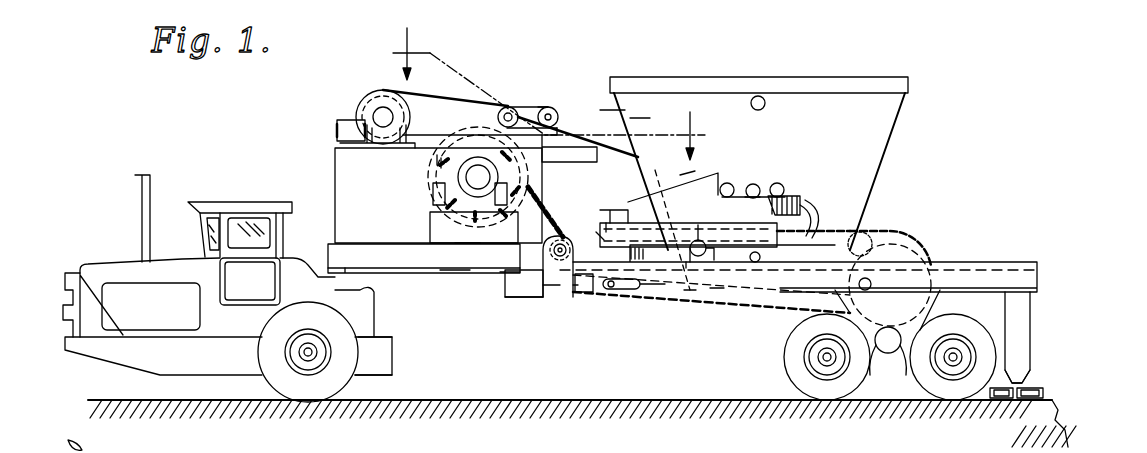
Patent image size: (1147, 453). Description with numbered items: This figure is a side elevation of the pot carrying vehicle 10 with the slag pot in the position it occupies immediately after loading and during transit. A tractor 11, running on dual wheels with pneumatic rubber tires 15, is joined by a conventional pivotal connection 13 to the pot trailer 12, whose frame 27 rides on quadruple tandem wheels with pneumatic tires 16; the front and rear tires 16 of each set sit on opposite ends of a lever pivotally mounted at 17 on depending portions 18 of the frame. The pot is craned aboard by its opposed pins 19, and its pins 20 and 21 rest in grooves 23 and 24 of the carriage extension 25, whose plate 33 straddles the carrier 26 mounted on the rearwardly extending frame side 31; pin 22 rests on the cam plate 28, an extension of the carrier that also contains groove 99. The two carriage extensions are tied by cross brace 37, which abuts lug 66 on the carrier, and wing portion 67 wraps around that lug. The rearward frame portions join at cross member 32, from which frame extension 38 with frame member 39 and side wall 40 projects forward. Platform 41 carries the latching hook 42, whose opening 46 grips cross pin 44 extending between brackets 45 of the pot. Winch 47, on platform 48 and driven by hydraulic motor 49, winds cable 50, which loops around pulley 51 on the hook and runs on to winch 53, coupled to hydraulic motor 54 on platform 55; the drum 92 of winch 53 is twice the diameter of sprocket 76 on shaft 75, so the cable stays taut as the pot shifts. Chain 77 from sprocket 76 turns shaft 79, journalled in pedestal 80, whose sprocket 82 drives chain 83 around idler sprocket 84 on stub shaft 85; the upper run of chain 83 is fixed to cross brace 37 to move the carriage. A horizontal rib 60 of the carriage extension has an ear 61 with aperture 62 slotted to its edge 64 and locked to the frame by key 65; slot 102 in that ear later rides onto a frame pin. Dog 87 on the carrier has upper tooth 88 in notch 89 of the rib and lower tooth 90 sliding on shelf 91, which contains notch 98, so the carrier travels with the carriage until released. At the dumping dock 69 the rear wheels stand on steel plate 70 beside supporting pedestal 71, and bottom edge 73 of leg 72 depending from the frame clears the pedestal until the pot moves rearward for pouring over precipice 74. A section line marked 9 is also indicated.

The section line 9 is at (548, 94).
The pot carrying vehicle 10 is at (940, 58).
The tractor 11 is at (95, 262).
The pot trailer 12 is at (452, 272).
The pivotal connection 13 is at (378, 285).
The pneumatic rubber tires 15 is at (262, 350).
The rubber pneumatic tires 16 is at (785, 372).
The lever pivot 17 is at (888, 353).
The depending portions of the frame 18 is at (866, 318).
The pins 19 is at (766, 103).
The pin 20 is at (730, 183).
The pin 21 is at (757, 184).
The pin 22 is at (783, 185).
The groove 23 is at (725, 183).
The groove 24 is at (752, 184).
The carriage extension 25 is at (686, 172).
The carrier 26 is at (850, 237).
The frame 27 is at (690, 290).
The cam plate 28 is at (790, 197).
The frame side portion 31 is at (622, 293).
The cross member 32 is at (520, 297).
The plate 33 is at (686, 186).
The cross brace 37 is at (620, 212).
The frame extension 38 is at (465, 268).
The frame member 39 is at (510, 273).
The side wall 40 is at (423, 185).
The platform 41 is at (612, 110).
The latching hook 42 is at (540, 105).
The cross pin 44 is at (562, 112).
The bracket 45 is at (642, 118).
The opening 46 is at (552, 106).
The winch 47 is at (372, 92).
The platform 48 is at (337, 138).
The hydraulic motor 49 is at (340, 122).
The cable 50 is at (440, 103).
The pulley 51 is at (506, 108).
The winch 53 is at (460, 140).
The hydraulic motor 54 is at (435, 193).
The platform 55 is at (432, 222).
The horizontal rib 60 is at (655, 235).
The ear portion 61 is at (634, 258).
The aperture 62 is at (548, 297).
The edge of ear 64 is at (584, 292).
The key 65 is at (590, 292).
The lug 66 is at (598, 236).
The wing portion 67 is at (610, 225).
The dumping dock 69 is at (672, 392).
The steel plate 70 is at (578, 398).
The supporting pedestal 71 is at (1045, 392).
The leg portion 72 is at (1032, 305).
The bottom edge 73 is at (1030, 375).
The precipice 74 is at (895, 113).
The shaft 75 is at (466, 178).
The sprocket 76 is at (462, 243).
The chain 77 is at (545, 208).
The shaft 79 is at (540, 262).
The pedestal 80 is at (545, 282).
The sprocket 82 is at (550, 243).
The chain 83 is at (885, 230).
The sprocket 84 is at (910, 240).
The stub shaft 85 is at (934, 262).
The dog 87 is at (690, 262).
The upper tooth 88 is at (698, 240).
The notch 89 is at (706, 246).
The lower tooth 90 is at (716, 290).
The shelf 91 is at (760, 262).
The drum 92 is at (438, 160).
The notch 98 is at (940, 270).
The groove 99 is at (812, 208).
The slot 102 is at (620, 293).